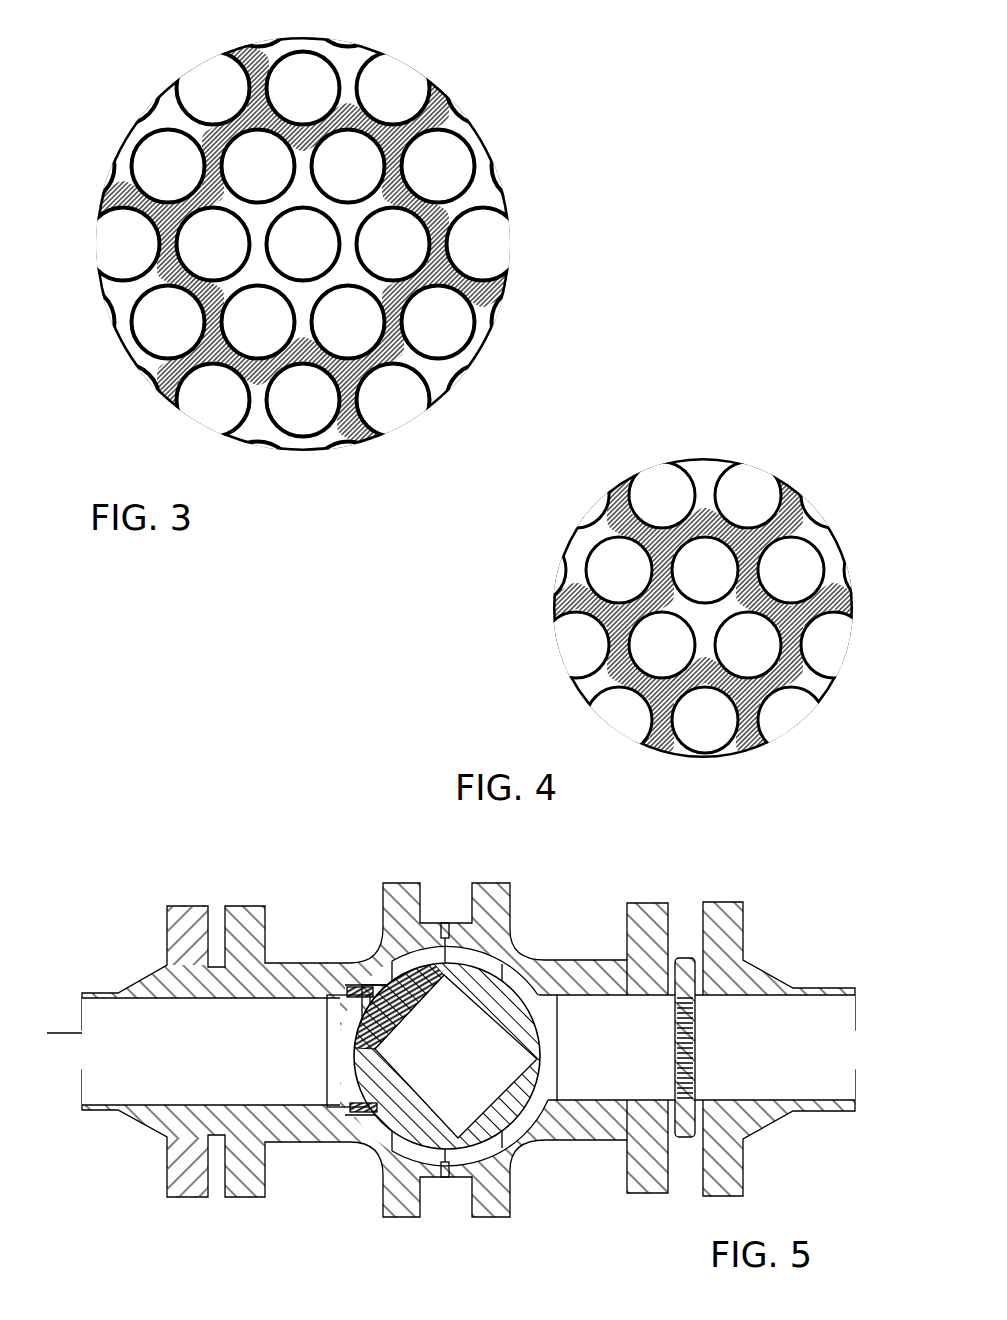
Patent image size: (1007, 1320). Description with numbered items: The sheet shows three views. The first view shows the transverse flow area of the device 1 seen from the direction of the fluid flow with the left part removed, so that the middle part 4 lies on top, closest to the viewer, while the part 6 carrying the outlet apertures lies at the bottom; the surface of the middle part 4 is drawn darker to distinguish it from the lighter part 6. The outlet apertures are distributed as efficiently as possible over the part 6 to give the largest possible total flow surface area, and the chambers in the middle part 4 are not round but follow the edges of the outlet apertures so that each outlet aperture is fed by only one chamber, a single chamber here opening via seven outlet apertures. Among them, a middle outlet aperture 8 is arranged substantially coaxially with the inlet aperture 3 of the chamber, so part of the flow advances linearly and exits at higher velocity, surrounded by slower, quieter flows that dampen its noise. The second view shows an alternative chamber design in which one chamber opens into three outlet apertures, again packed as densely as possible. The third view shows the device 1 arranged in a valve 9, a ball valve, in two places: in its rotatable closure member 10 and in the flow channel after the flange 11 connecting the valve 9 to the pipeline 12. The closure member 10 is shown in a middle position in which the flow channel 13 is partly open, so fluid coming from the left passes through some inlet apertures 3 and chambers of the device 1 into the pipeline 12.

In FIG. 5, the device 1 is at (346, 1022).
In FIG. 5, the inlet apertures 3 is at (357, 1000).
In FIG. 3, the middle part 4 is at (226, 52).
In FIG. 3, the part situated on the right 6 is at (134, 128).
In FIG. 3, the middle outlet aperture 8 is at (283, 248).
In FIG. 5, the valve 9 is at (236, 871).
In FIG. 5, the closure member 10 is at (393, 1108).
In FIG. 5, the flange 11 is at (641, 903).
In FIG. 5, the pipeline 12 is at (826, 998).
In FIG. 5, the flow channel 13 is at (302, 1097).